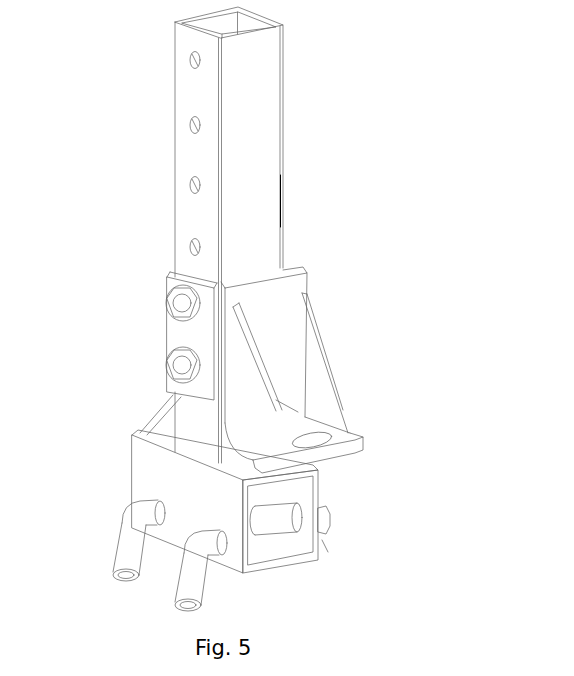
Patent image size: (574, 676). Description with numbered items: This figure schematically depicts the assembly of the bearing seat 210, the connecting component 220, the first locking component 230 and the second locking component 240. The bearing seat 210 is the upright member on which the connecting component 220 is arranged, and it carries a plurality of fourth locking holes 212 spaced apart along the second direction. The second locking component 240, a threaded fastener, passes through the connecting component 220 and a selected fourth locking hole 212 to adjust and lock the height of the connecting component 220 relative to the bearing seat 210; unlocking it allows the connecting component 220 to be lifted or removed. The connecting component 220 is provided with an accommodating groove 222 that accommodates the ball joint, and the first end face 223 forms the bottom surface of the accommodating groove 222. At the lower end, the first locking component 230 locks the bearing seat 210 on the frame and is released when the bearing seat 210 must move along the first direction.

The bearing seat 210 is at (243, 95).
The fourth locking hole 212 is at (181, 116).
The connecting component 220 is at (298, 357).
The accommodating groove 222 is at (307, 352).
The first end face 223 is at (335, 439).
The first locking component 230 is at (135, 544).
The second locking component 240 is at (178, 308).